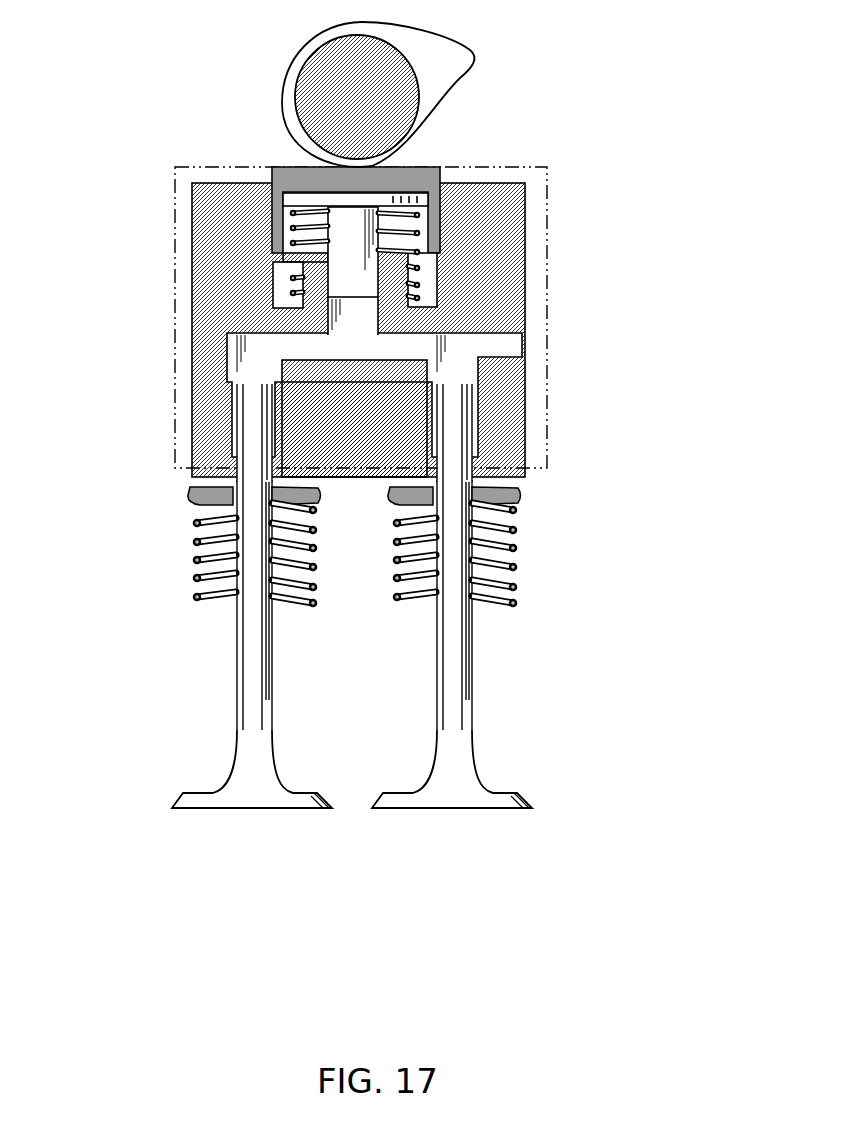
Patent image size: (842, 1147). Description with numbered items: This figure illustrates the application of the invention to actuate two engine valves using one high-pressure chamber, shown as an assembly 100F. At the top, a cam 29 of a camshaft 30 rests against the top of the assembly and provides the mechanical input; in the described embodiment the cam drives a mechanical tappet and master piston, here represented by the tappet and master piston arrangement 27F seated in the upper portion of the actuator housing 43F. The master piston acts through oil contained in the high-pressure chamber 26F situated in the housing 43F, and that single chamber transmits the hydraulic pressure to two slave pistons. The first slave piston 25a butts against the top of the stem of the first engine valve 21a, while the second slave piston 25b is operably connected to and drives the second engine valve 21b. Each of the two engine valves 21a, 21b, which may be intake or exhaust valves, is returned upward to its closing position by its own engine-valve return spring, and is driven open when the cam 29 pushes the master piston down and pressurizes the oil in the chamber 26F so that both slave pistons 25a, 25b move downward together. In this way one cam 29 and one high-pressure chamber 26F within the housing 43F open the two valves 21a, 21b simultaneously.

The cam 29 is at (423, 82).
The camshaft 30 is at (322, 78).
The valve actuation assembly 100F is at (563, 226).
The housing 43F is at (210, 428).
The plunger and cap assembly 27F is at (342, 287).
The valve bridge 26F is at (313, 353).
The first valve stem 25a is at (250, 425).
The second slave piston 25b is at (455, 430).
The first valve 21a is at (243, 787).
The second engine valve 21b is at (452, 783).